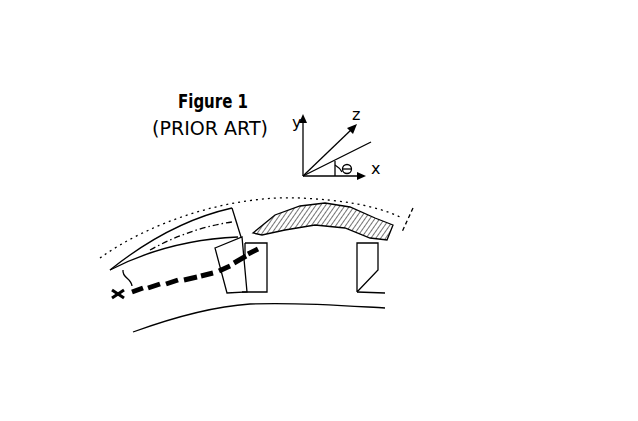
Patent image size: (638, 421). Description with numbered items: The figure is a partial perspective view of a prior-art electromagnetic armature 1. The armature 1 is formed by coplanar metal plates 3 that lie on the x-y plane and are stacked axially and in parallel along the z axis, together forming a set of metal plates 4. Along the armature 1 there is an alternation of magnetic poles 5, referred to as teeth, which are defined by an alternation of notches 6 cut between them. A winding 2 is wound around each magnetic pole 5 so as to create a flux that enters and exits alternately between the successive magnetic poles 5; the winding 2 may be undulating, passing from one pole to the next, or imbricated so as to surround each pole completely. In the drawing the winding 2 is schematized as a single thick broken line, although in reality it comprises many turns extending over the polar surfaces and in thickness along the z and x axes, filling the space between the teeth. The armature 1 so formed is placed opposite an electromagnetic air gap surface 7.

The electromagnetic armature 1 is at (115, 212).
The winding 2 is at (118, 301).
The metal plates 3 is at (380, 243).
The set of metal plates 4 is at (250, 303).
The magnetic poles 5 is at (226, 210).
The notches 6 is at (380, 276).
The electromagnetic air gap surface 7 is at (163, 220).